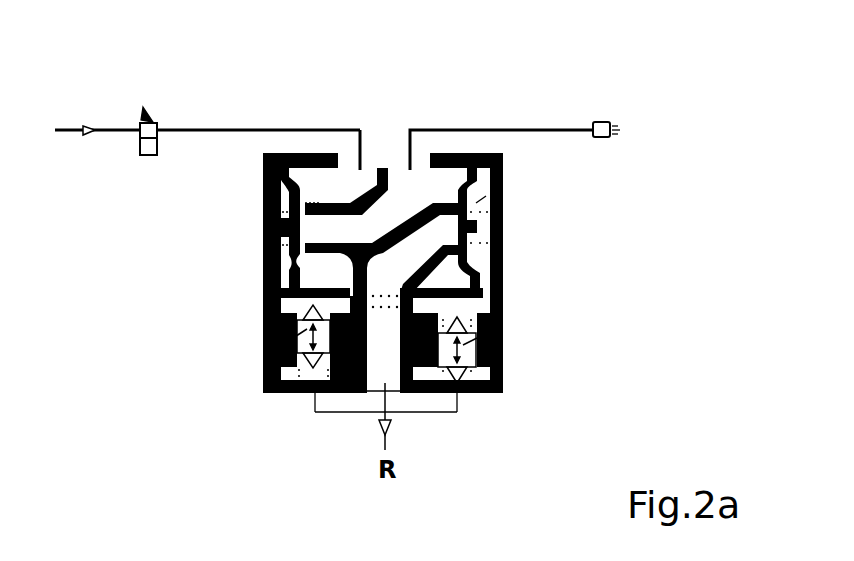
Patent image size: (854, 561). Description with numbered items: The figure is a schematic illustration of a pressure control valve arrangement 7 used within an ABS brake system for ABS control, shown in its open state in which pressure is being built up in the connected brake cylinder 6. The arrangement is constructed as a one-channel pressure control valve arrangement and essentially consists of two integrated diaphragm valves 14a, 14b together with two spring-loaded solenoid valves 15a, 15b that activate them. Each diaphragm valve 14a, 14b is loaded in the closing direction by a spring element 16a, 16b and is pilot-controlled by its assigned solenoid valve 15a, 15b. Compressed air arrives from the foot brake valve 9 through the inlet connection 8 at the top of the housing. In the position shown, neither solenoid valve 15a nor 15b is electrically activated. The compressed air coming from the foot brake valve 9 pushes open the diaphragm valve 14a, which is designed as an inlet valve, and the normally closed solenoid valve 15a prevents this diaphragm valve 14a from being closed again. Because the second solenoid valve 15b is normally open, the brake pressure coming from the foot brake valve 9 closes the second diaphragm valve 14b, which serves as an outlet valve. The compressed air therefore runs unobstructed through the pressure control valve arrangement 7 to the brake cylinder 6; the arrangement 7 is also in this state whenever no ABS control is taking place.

The pressure control valve arrangement 7 is at (75, 56).
The foot brake valve 9 is at (153, 122).
The inlet connection 8 is at (340, 130).
The brake cylinder 6 is at (600, 120).
The spring element 16a is at (265, 202).
The spring element 16b is at (503, 200).
The diaphragm valve 14a is at (265, 270).
The diaphragm valve 14b is at (503, 270).
The solenoid valve 15a is at (265, 343).
The solenoid valve 15b is at (503, 340).